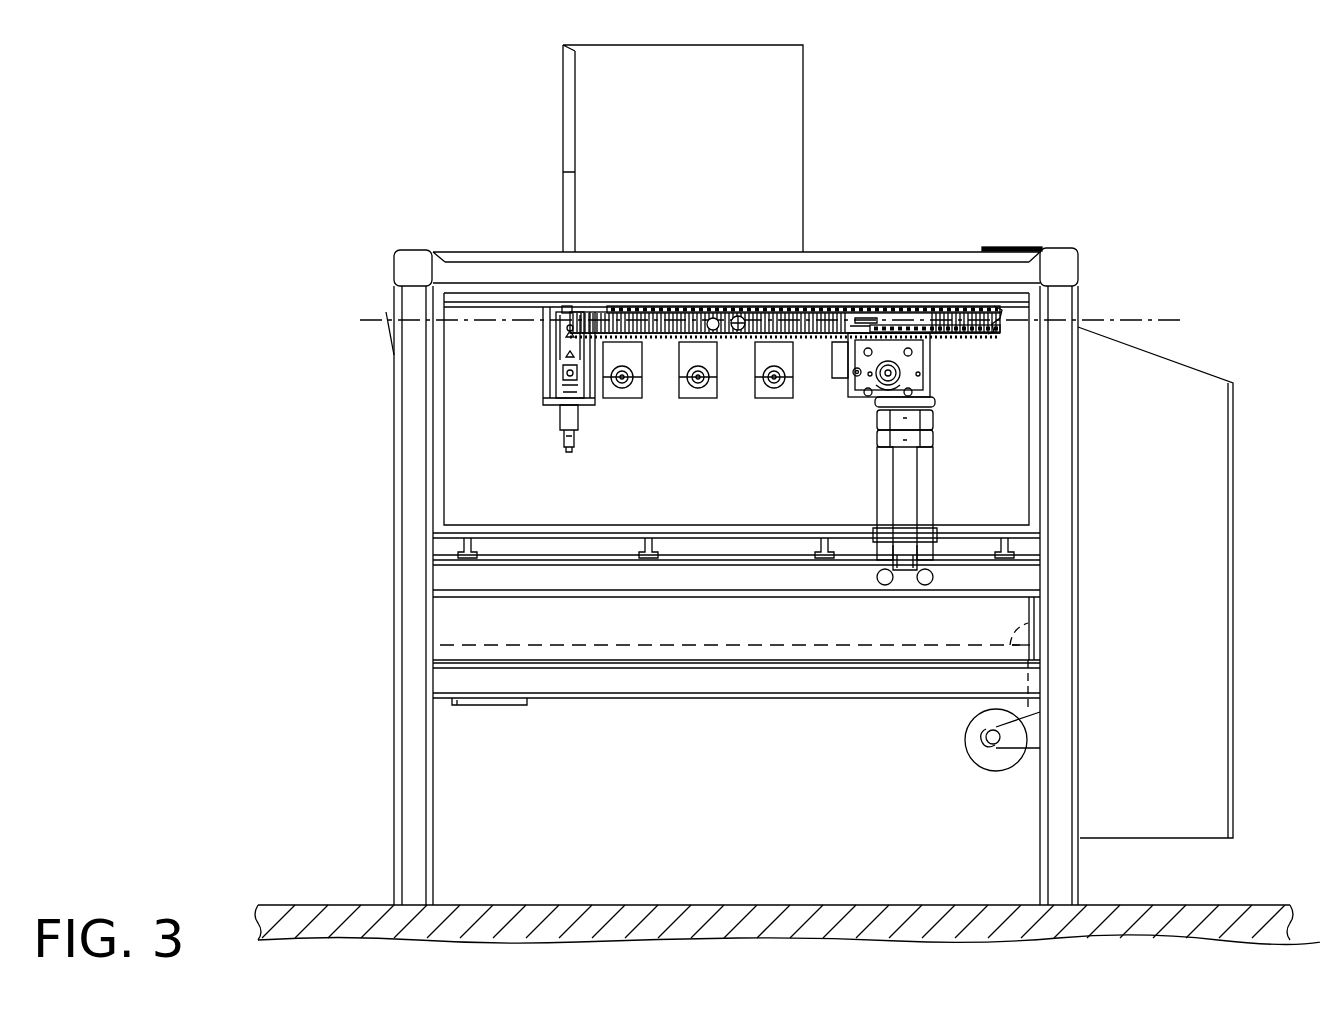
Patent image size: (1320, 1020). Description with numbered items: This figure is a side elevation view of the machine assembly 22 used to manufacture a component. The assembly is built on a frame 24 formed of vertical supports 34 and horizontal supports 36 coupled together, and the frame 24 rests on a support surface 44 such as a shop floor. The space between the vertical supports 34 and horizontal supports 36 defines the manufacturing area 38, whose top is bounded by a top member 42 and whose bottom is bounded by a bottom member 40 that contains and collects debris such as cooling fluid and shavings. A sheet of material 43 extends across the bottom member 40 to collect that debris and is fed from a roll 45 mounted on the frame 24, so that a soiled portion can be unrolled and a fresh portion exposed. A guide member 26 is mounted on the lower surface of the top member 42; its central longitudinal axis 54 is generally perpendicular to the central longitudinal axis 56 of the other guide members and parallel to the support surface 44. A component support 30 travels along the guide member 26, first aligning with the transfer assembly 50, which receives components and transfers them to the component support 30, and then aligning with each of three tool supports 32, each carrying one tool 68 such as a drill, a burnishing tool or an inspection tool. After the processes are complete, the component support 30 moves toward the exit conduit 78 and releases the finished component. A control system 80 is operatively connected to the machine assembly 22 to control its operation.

The machine assembly 22 is at (1026, 132).
The frame 24 is at (1086, 302).
The guide member 26 is at (1006, 343).
The component support 30 is at (893, 358).
The tool supports 32 is at (623, 404).
The vertical supports 34 is at (433, 843).
The horizontal supports 36 is at (1060, 256).
The manufacturing area 38 is at (815, 372).
The bottom member 40 is at (668, 637).
The top member 42 is at (938, 290).
The sheet of material 43 is at (1030, 622).
The support surface 44 is at (1248, 905).
The roll 45 is at (978, 762).
The transfer assembly 50 is at (541, 374).
The central longitudinal axis 54 is at (1143, 320).
The central longitudinal axis 56 is at (740, 306).
The tool 68 is at (630, 383).
The exit conduit 78 is at (933, 505).
The control system 80 is at (1206, 711).